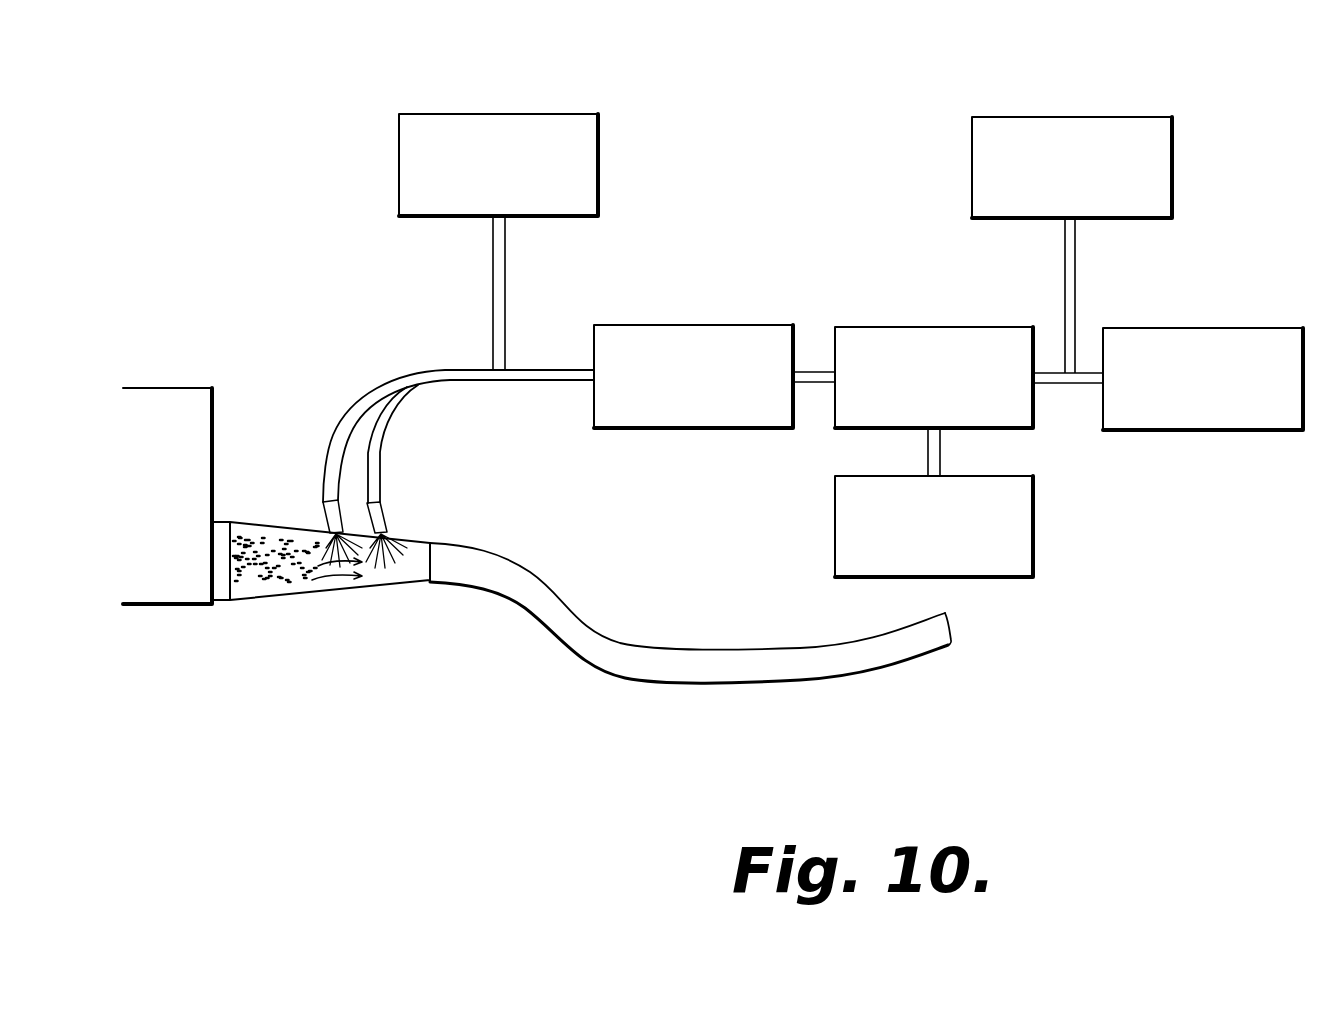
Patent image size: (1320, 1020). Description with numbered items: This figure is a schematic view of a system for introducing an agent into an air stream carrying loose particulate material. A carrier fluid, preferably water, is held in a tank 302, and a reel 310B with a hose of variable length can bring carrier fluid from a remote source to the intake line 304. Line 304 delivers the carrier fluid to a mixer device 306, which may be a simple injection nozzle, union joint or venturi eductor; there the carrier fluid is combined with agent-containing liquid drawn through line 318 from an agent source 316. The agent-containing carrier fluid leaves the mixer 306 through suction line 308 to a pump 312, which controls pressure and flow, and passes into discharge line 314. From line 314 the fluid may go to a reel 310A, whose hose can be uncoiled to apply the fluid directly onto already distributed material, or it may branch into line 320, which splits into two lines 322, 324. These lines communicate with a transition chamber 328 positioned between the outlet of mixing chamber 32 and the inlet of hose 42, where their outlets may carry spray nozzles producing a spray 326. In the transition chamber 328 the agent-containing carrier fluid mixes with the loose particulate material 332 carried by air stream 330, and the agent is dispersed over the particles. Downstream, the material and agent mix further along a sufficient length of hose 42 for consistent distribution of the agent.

The mixing chamber 32 is at (163, 605).
The hose 42 is at (905, 648).
The tank 302 is at (1210, 328).
The intake line 304 is at (1070, 385).
The mixer device 306 is at (940, 327).
The suction line 308 is at (815, 372).
The reel 310A is at (513, 113).
The reel 310B is at (1083, 117).
The pump 312 is at (688, 325).
The discharge line 314 is at (520, 380).
The agent source 316 is at (1033, 515).
The agent line 318 is at (932, 448).
The line 320 is at (445, 368).
The line 322 is at (330, 510).
The line 324 is at (375, 512).
The spray 326 is at (400, 548).
The transition chamber 328 is at (383, 585).
The air stream 330 is at (318, 588).
The loose particulate material 332 is at (268, 584).